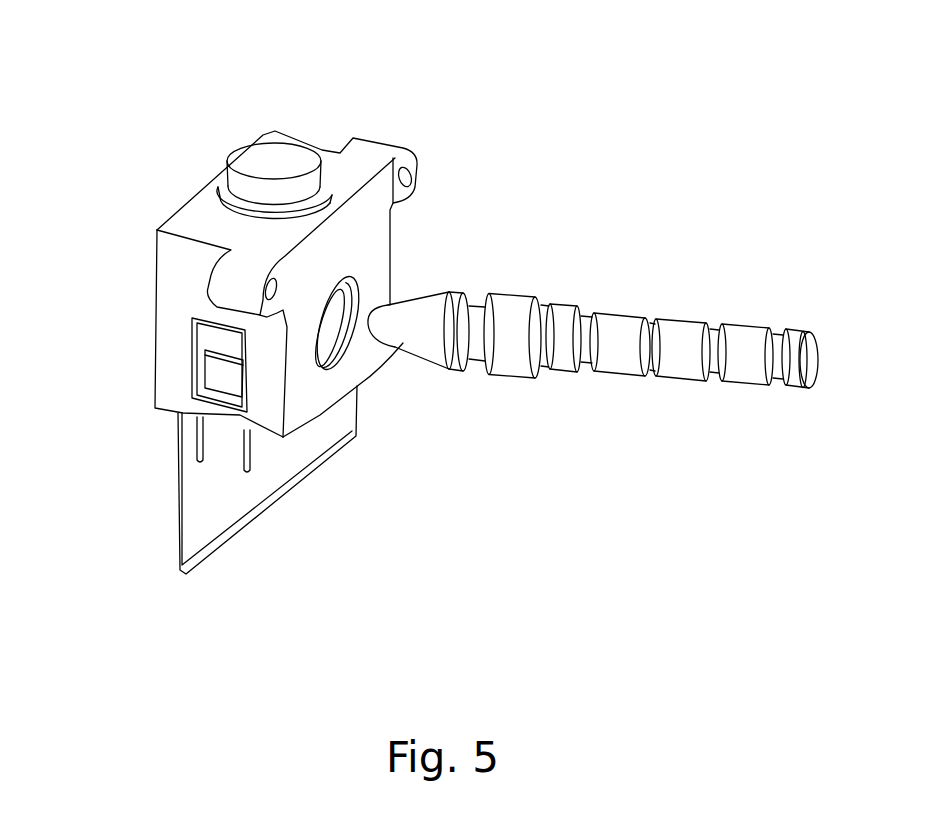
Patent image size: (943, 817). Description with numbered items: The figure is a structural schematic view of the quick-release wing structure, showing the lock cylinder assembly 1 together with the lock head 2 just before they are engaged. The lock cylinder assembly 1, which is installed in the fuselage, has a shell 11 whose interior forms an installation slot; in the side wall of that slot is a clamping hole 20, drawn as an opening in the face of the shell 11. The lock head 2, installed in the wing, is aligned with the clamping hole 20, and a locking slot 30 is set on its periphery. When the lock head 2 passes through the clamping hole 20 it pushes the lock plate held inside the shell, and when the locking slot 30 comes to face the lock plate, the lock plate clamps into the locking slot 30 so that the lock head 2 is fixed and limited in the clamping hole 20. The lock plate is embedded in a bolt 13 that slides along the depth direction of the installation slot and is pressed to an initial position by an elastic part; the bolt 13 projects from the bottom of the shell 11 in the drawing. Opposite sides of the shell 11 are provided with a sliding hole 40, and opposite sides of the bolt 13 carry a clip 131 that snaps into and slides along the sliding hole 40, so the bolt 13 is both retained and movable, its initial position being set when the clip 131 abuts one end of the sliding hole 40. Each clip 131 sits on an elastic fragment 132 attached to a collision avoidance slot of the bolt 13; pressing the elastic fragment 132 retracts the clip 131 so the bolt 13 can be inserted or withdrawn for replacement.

The lock cylinder assembly 1 is at (362, 83).
The shell 11 is at (362, 222).
The bolt 13 is at (204, 499).
The clip 131 is at (223, 380).
The elastic fragment 132 is at (220, 437).
The clamping hole 20 is at (337, 338).
The locking slot 30 is at (476, 353).
The sliding hole 40 is at (210, 331).
The lock head 2 is at (618, 353).